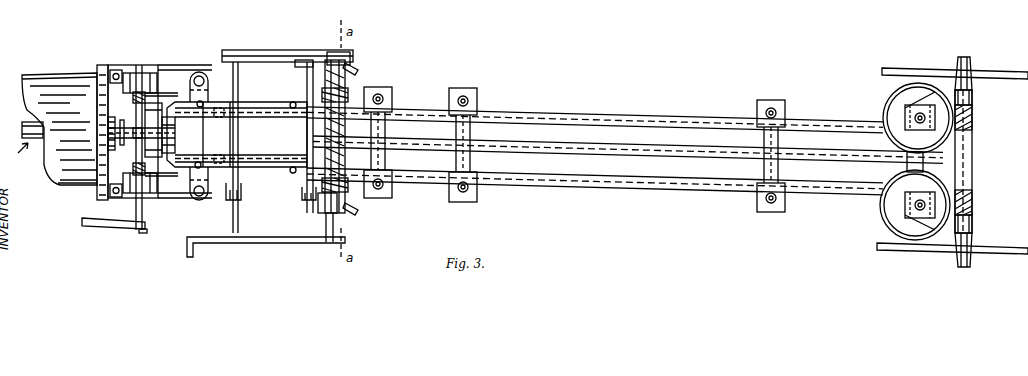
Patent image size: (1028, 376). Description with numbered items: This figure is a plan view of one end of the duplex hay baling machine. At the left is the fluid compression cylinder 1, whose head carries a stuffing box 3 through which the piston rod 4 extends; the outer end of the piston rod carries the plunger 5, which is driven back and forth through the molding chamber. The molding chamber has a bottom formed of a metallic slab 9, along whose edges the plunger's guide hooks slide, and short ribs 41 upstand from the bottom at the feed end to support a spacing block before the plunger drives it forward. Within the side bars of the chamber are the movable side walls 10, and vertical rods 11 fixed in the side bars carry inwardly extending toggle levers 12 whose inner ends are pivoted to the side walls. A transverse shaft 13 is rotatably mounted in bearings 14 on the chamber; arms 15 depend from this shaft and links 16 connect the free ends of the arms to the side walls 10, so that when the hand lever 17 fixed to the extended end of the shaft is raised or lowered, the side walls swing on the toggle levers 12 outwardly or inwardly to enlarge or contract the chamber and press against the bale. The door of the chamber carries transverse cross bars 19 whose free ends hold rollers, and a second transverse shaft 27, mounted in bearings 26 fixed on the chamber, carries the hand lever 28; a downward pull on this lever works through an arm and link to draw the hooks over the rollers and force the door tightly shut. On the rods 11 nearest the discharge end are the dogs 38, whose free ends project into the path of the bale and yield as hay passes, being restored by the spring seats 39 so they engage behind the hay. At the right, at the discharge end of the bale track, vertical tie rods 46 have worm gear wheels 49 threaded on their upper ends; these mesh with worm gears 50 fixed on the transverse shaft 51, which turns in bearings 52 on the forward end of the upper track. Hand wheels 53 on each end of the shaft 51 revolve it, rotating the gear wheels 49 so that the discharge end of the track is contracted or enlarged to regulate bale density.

The fluid compression cylinder 1 is at (58, 77).
The stuffing box 3 is at (110, 116).
The piston rod 4 is at (155, 126).
The plunger 5 is at (162, 146).
The slab 9 is at (237, 134).
The movable side wall 10 is at (274, 117).
The vertical rod 11 is at (205, 74).
The toggle lever 12 is at (205, 83).
The transverse shaft 13 is at (135, 142).
The bearing 14 is at (140, 76).
The arm 15 is at (135, 100).
The link 16 is at (165, 93).
The hand lever 17 is at (106, 224).
The transverse cross bar 19 is at (239, 139).
The bearing 26 is at (336, 52).
The transverse shaft 27 is at (325, 225).
The hand lever 28 is at (243, 243).
The dog 38 is at (346, 95).
The spring seat 39 is at (358, 70).
The short rib 41 is at (180, 136).
The vertical tie rod 46 is at (908, 112).
The worm gear wheel 49 is at (882, 116).
The worm gear 50 is at (973, 122).
The transverse shaft 51 is at (973, 165).
The bearing 52 is at (973, 97).
The hand wheel 53 is at (1012, 75).